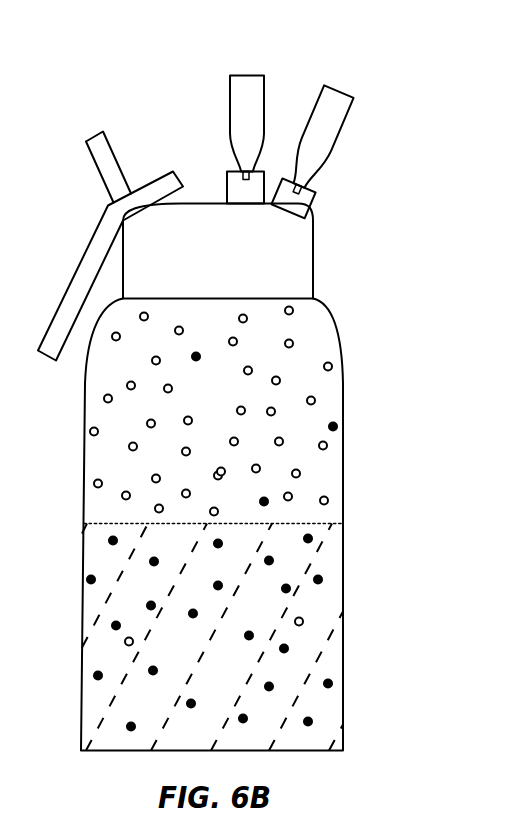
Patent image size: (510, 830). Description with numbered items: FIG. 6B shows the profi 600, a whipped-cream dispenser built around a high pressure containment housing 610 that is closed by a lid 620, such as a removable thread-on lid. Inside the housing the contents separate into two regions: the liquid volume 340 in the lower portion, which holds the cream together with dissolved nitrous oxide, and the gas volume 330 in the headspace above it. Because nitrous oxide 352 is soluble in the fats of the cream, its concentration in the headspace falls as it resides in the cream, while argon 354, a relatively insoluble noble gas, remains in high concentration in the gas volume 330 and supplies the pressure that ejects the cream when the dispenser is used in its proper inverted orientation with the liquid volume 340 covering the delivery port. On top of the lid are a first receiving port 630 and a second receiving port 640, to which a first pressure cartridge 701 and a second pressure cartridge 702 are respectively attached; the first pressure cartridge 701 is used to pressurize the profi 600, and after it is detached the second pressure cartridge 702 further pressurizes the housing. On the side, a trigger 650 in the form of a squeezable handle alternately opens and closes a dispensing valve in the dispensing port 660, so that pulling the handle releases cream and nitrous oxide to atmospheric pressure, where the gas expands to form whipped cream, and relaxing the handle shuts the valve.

The profi 600 is at (357, 57).
The high pressure containment housing 610 is at (332, 318).
The lid 620 is at (312, 252).
The first receiving port 630 is at (315, 197).
The second receiving port 640 is at (230, 172).
The trigger 650 is at (86, 249).
The dispensing port 660 is at (90, 140).
The first pressure cartridge 701 is at (343, 88).
The second pressure cartridge 702 is at (250, 77).
The gas volume 330 is at (231, 403).
The liquid volume 340 is at (231, 654).
The nitrous oxide 352 is at (334, 423).
The argon 354 is at (330, 364).